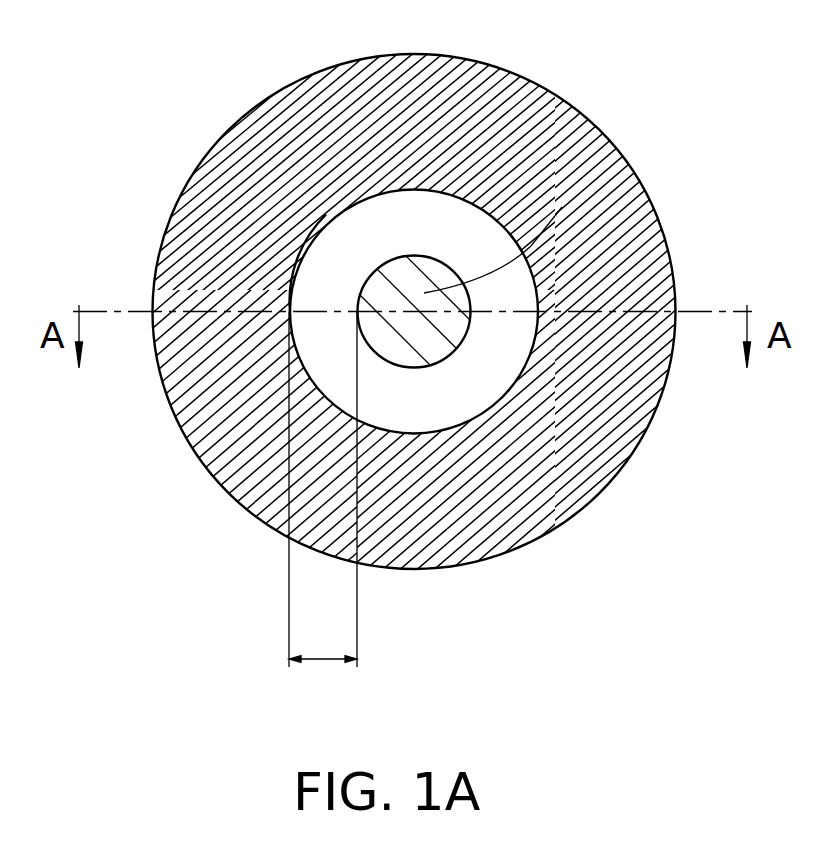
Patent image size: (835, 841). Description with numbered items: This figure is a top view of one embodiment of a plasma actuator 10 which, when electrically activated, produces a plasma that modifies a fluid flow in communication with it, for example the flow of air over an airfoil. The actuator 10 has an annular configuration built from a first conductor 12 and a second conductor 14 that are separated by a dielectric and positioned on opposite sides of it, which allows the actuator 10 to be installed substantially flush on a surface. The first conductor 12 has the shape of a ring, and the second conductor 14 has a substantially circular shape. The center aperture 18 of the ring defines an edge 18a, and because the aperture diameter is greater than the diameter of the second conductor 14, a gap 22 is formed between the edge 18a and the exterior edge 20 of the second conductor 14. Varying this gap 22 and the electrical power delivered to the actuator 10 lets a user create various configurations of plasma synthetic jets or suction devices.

The plasma actuator 10 is at (733, 156).
The first conductor 12 is at (496, 88).
The second conductor 14 is at (590, 179).
The center aperture 18 is at (328, 248).
The edge 18a is at (296, 272).
The exterior edge 20 is at (372, 263).
The gap 22 is at (318, 660).